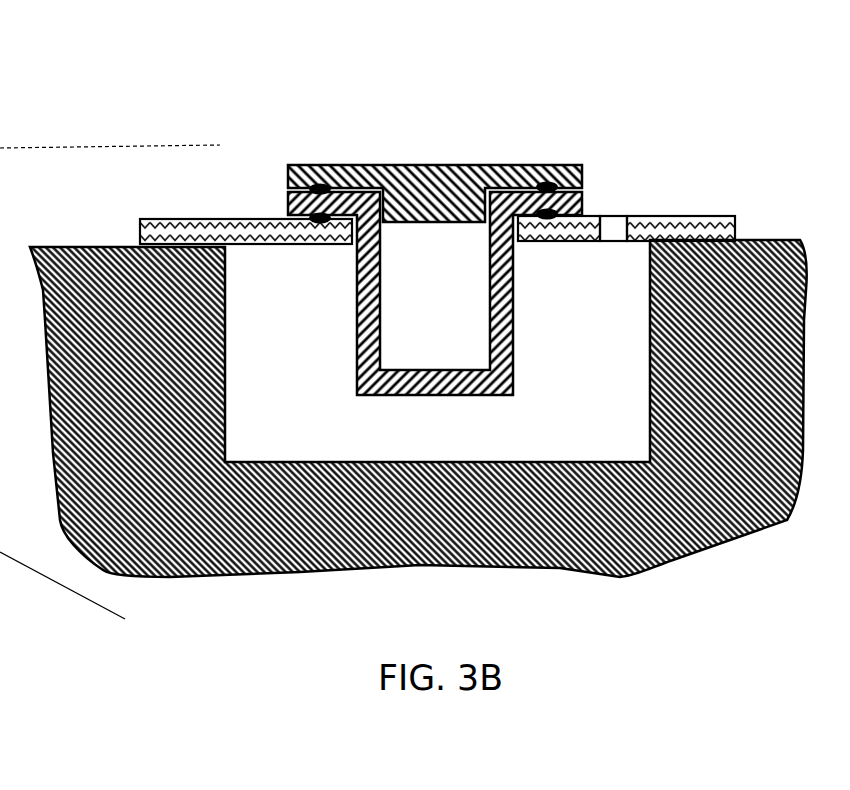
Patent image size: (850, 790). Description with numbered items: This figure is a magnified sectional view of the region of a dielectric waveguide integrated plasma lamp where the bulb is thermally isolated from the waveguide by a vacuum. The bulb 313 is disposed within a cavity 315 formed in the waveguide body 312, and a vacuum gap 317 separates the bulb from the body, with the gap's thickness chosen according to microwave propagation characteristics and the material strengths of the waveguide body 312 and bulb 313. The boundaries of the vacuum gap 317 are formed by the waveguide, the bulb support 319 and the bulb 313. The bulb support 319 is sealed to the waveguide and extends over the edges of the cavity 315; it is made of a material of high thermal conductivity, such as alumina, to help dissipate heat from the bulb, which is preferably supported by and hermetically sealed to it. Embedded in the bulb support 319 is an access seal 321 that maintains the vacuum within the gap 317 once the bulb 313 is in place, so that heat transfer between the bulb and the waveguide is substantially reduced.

The waveguide body 312 is at (747, 317).
The bulb 313 is at (437, 165).
The cavity 315 is at (630, 340).
The vacuum gap 317 is at (287, 298).
The bulb support 319 is at (203, 222).
The access seal 321 is at (616, 227).